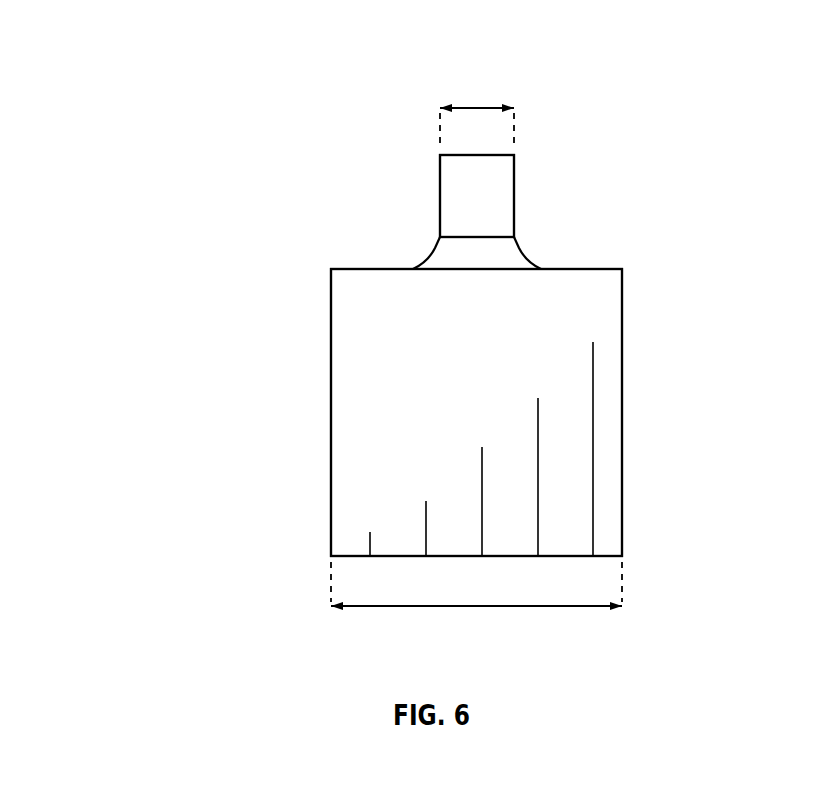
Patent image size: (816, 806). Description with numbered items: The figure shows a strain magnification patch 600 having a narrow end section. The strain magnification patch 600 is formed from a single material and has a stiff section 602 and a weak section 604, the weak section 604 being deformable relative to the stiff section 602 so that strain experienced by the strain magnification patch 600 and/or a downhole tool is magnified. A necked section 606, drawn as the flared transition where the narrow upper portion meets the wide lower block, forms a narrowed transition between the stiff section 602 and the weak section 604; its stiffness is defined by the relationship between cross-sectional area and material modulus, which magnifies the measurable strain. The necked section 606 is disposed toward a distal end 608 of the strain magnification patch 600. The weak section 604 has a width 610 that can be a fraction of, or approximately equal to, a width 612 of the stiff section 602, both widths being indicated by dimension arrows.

The strain magnification patch 600 is at (150, 53).
The stiff section 602 is at (623, 380).
The weak section 604 is at (515, 202).
The necked section 606 is at (432, 247).
The distal end 608 is at (330, 368).
The width of the weak section 610 is at (477, 106).
The width of the stiff section 612 is at (477, 607).